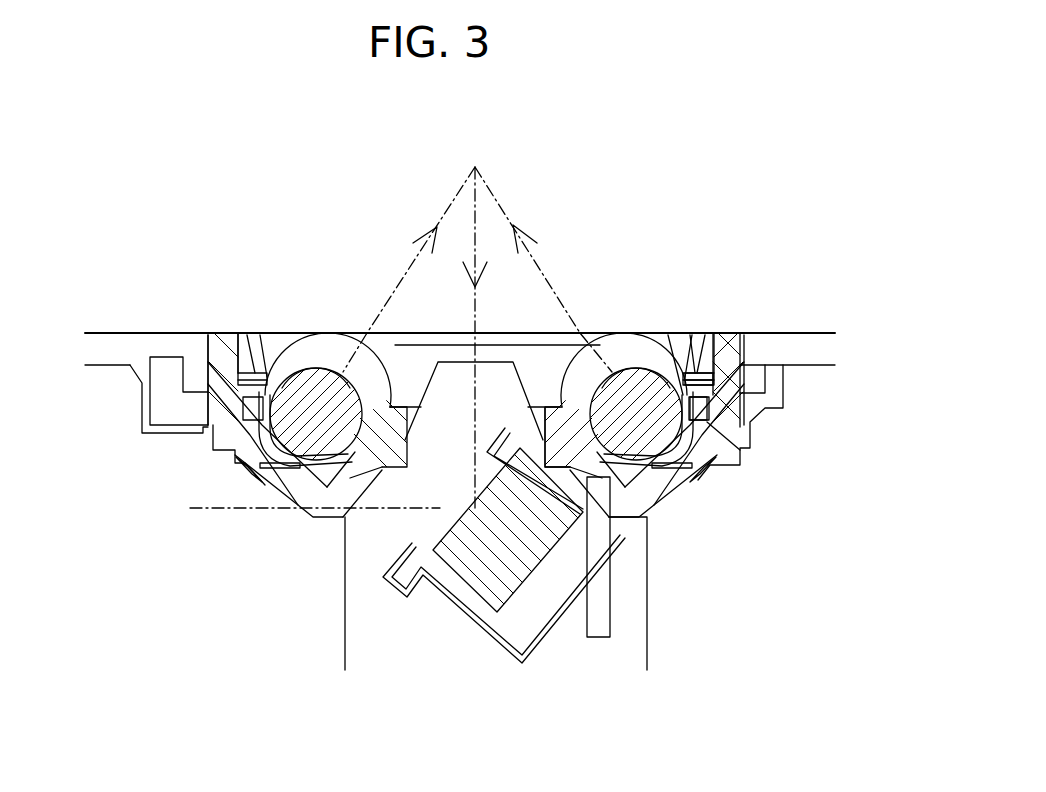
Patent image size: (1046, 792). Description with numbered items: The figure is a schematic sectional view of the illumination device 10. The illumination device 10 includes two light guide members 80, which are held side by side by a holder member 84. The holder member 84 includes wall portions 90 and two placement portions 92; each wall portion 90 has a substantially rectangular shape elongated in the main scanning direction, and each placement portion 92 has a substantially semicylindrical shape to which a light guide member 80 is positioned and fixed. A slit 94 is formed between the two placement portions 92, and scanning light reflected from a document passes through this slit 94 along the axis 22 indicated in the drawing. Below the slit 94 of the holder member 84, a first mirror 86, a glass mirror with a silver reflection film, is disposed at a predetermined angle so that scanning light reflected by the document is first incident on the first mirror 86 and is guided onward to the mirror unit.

The illumination device 10 is at (175, 176).
The optical axis 22 is at (475, 167).
The light guide member 80 is at (305, 380).
The holder member 84 is at (232, 328).
The first mirror 86 is at (483, 590).
The wall portion 90 is at (213, 385).
The placement portion 92 is at (303, 500).
The slit 94 is at (456, 418).